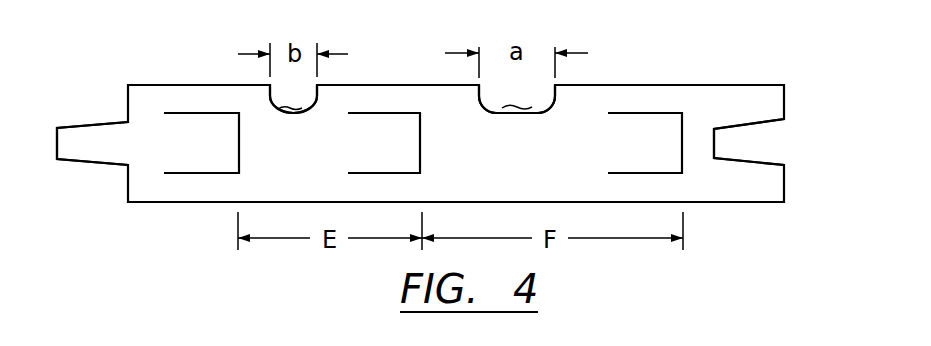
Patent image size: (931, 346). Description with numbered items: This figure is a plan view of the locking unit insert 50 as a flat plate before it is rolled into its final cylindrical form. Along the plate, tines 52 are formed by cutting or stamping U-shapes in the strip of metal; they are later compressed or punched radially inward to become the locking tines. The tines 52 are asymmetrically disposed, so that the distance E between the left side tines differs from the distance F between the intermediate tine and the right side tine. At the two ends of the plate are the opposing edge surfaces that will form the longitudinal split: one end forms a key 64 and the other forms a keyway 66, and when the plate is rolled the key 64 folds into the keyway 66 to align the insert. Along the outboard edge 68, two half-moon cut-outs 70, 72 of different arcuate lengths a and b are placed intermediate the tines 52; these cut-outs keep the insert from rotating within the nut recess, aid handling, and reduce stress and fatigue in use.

The locking unit insert 50 is at (165, 212).
The tines 52 is at (203, 113).
The key 64 is at (95, 125).
The keyway 66 is at (758, 162).
The outboard edge 68 is at (593, 85).
The cut-out 70 is at (517, 94).
The cut-out 72 is at (293, 93).